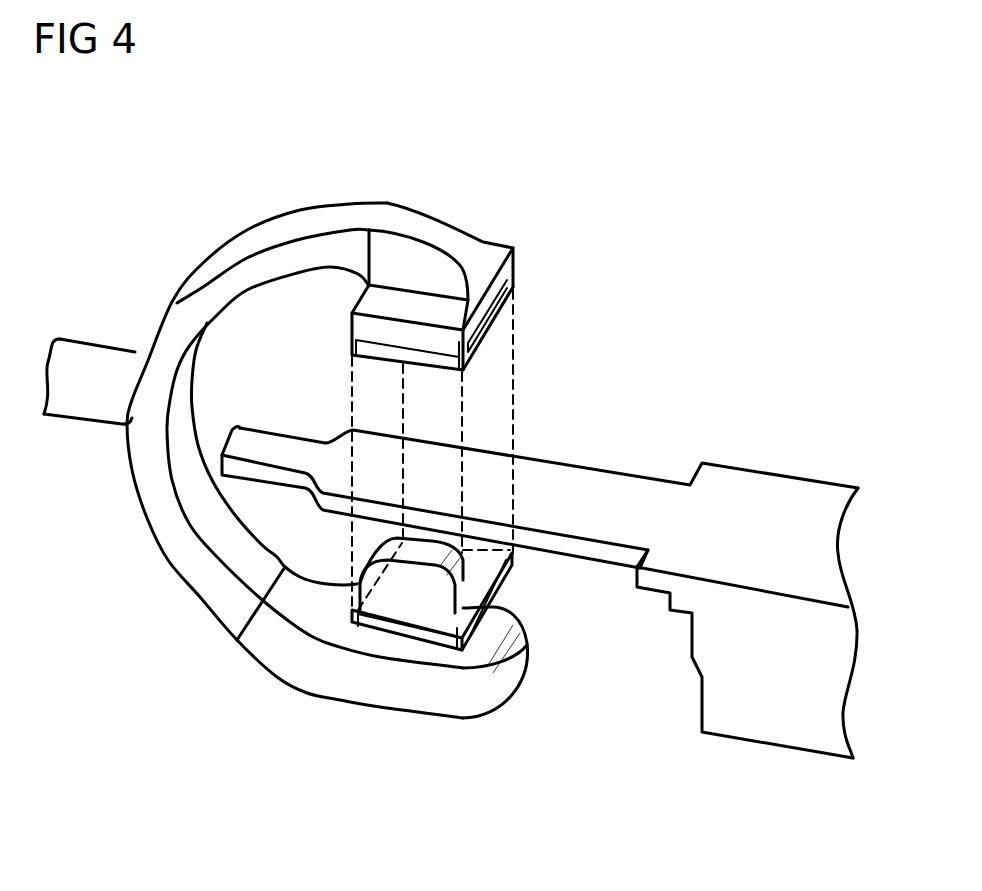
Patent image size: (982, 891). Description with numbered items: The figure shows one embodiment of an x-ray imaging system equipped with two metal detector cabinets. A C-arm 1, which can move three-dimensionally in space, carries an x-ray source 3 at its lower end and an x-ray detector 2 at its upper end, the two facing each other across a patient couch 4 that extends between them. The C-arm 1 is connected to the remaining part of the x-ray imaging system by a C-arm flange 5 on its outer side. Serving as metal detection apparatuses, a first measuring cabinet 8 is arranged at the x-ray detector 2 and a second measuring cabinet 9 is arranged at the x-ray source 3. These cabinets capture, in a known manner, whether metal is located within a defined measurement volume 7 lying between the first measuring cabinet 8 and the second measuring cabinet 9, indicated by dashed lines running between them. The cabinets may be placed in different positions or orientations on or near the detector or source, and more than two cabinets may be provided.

The C-arm 1 is at (290, 232).
The x-ray detector 2 is at (497, 255).
The x-ray source 3 is at (465, 555).
The patient couch 4 is at (627, 487).
The C-arm flange 5 is at (78, 340).
The measurement volume 7 is at (515, 404).
The first measuring cabinet 8 is at (352, 346).
The second measuring cabinet 9 is at (487, 590).